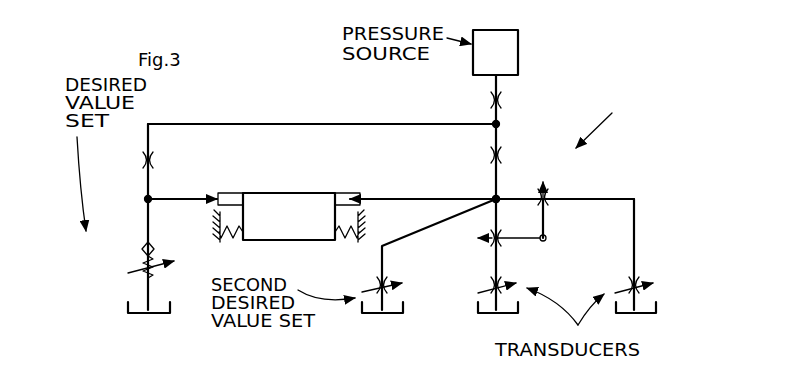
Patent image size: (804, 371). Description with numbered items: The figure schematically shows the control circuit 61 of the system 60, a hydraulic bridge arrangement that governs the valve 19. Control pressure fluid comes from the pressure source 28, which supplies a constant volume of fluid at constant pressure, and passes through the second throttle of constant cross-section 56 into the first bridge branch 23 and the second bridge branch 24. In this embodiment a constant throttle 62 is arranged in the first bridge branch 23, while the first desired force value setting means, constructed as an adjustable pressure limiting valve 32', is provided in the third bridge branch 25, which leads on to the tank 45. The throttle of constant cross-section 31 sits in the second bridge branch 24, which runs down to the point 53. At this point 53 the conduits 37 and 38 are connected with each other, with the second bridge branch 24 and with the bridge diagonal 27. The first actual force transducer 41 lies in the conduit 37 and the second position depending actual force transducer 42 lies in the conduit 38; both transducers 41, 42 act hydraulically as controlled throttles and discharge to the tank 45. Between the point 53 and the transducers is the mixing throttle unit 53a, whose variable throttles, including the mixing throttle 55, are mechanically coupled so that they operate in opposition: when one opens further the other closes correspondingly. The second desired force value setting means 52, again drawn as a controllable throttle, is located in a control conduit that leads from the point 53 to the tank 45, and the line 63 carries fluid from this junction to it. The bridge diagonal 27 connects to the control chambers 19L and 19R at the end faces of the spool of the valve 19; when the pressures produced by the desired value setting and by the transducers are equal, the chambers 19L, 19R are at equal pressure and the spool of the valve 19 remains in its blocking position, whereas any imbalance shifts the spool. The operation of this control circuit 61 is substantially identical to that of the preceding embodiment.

The valve 19 is at (280, 215).
The control chamber 19L is at (228, 192).
The control chamber 19R is at (346, 192).
The first bridge branch 23 is at (253, 123).
The second bridge branch 24 is at (500, 138).
The third bridge branch 25 is at (147, 222).
The bridge diagonal 27 is at (382, 199).
The pressure source 28 is at (507, 64).
The throttle of constant cross-section 31 is at (503, 154).
The adjustable pressure limiting valve 32' is at (128, 258).
The conduit 37 is at (499, 218).
The conduit 38 is at (637, 233).
The first actual force transducer 41 is at (507, 280).
The second position depending actual force transducer 42 is at (645, 279).
The tank 45 is at (128, 304).
The second desired force value setting means 52 is at (370, 286).
The point 53 is at (494, 197).
The mixing throttle unit 53a is at (548, 232).
The mixing throttle 55 is at (548, 196).
The second throttle of constant cross-section 56 is at (508, 100).
The system 60 is at (608, 125).
The control circuit 61 is at (369, 121).
The constant throttle 62 is at (141, 160).
The line 63 is at (420, 238).